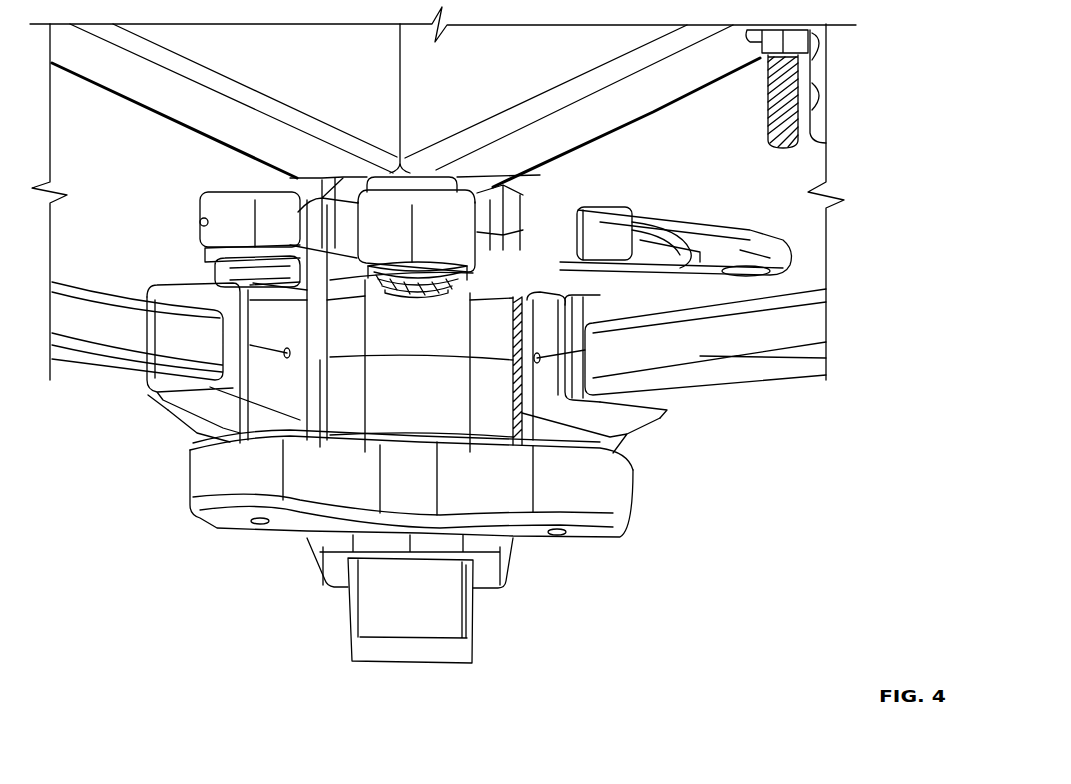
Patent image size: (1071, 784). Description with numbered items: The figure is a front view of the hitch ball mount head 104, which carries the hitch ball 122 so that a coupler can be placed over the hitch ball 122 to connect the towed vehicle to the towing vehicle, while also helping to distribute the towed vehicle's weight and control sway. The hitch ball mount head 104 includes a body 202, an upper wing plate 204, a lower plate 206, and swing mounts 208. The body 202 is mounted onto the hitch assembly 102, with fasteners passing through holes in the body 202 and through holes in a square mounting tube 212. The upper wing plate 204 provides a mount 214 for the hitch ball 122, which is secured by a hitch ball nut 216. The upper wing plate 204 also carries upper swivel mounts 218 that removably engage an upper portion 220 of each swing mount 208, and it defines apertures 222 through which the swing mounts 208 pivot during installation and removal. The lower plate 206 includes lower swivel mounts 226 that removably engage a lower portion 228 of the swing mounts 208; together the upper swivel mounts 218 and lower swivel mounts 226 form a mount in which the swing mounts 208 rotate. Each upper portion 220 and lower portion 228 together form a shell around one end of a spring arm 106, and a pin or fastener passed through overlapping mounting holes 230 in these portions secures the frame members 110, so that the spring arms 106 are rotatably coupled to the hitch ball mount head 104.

The hitch assembly 102 is at (450, 663).
The hitch ball mount head 104 is at (184, 620).
The spring arms 106 is at (122, 373).
The frame members 110 is at (130, 100).
The hitch ball 122 is at (403, 292).
The body 202 is at (373, 390).
The upper wing plate 204 is at (683, 228).
The lower plate 206 is at (193, 503).
The swing mounts 208 is at (168, 410).
The square mounting tube 212 is at (360, 650).
The mount 214 is at (317, 183).
The hitch ball nut 216 is at (367, 273).
The upper swivel mounts 218 is at (222, 228).
The upper portion 220 is at (155, 288).
The apertures 222 is at (643, 257).
The lower swivel mounts 226 is at (257, 532).
The lower portion 228 is at (147, 397).
The mounting holes 230 is at (290, 355).